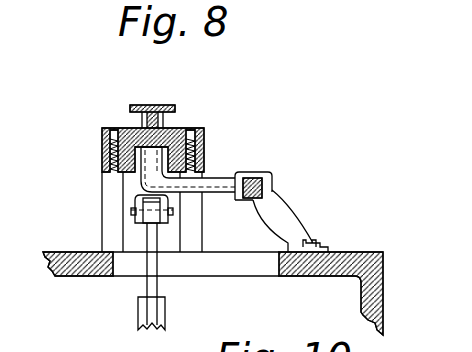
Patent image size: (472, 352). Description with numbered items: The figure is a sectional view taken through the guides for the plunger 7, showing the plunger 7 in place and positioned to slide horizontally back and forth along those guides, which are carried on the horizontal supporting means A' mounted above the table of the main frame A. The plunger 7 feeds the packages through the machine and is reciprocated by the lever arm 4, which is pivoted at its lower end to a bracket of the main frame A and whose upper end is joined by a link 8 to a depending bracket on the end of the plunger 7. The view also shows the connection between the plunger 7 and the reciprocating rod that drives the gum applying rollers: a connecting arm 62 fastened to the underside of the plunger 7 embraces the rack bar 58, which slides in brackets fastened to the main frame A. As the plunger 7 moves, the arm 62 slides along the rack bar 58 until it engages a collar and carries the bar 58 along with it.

The plunger 7 is at (163, 105).
The horizontal supporting means A' is at (157, 136).
The connecting arm 62 is at (213, 179).
The rack bar 58 is at (252, 190).
The link 8 is at (133, 199).
The lever arm 4 is at (166, 305).
The main frame A is at (216, 268).